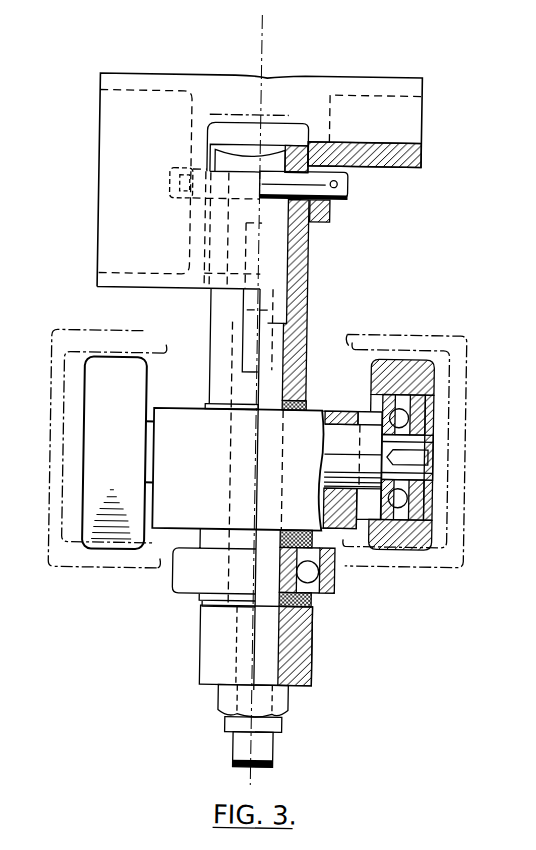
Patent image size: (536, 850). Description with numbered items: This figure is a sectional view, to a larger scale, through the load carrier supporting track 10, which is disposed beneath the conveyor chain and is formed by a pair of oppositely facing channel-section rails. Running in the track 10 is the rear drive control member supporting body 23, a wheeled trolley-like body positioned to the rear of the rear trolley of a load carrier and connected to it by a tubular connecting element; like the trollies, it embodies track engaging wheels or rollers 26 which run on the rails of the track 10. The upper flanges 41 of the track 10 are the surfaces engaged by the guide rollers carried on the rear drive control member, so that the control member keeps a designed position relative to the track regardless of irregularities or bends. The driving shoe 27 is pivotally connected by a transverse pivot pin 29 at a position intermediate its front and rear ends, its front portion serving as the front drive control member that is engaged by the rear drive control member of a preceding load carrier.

The driving shoe 27 is at (90, 90).
The transverse pivot pin 29 is at (344, 196).
The rear drive control member supporting body 23 is at (306, 322).
The upper flanges 41 is at (141, 340).
The track engaging wheels or rollers 26 is at (106, 541).
The load carrier supporting track 10 is at (55, 560).